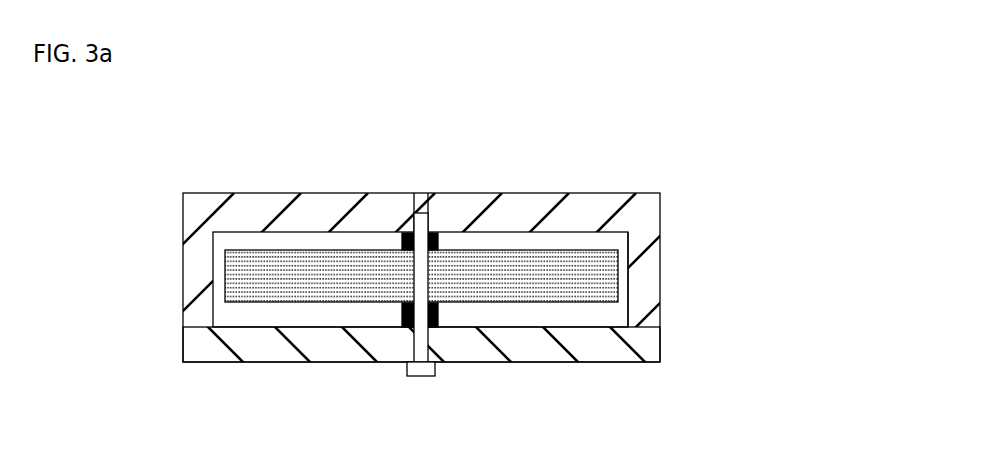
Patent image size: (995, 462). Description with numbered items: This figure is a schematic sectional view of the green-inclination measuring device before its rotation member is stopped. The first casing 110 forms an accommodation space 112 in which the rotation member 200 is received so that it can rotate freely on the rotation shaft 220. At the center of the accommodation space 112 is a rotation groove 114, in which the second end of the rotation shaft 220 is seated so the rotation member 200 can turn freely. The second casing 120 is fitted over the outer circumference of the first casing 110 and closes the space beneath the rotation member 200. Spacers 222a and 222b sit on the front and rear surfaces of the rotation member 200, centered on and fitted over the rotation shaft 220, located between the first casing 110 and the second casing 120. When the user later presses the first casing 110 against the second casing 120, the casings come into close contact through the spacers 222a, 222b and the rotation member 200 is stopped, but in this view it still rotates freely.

The first casing 110 is at (661, 193).
The accommodation space 112 is at (623, 310).
The rotation groove 114 is at (431, 221).
The second casing 120 is at (213, 350).
The rotation member 200 is at (231, 269).
The rotation shaft 220 is at (425, 343).
The spacer 222a is at (404, 242).
The spacer 222b is at (405, 314).